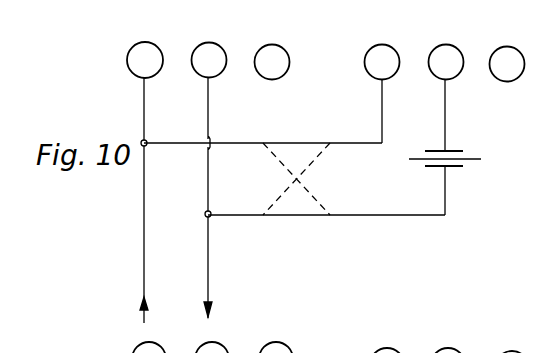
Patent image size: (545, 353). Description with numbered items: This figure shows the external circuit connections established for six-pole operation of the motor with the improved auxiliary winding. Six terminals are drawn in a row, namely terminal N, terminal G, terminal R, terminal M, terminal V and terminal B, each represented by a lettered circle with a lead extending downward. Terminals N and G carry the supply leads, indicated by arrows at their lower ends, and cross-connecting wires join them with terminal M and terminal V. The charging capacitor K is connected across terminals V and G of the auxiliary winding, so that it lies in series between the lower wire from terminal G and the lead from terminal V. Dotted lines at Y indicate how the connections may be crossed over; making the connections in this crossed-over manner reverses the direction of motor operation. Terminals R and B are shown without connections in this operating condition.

The terminal N is at (145, 182).
The terminal G is at (209, 181).
The terminal R is at (272, 62).
The terminal M is at (382, 94).
The terminal V is at (446, 130).
The terminal B is at (507, 64).
The charging capacitor K is at (453, 158).
The crossed-over connections Y is at (296, 179).